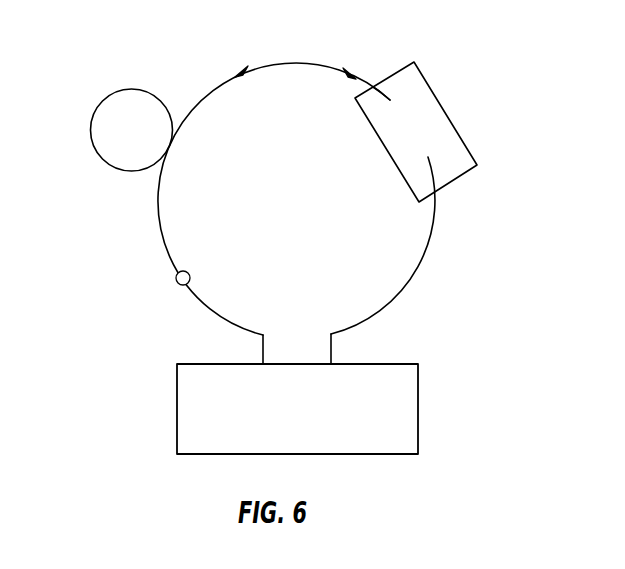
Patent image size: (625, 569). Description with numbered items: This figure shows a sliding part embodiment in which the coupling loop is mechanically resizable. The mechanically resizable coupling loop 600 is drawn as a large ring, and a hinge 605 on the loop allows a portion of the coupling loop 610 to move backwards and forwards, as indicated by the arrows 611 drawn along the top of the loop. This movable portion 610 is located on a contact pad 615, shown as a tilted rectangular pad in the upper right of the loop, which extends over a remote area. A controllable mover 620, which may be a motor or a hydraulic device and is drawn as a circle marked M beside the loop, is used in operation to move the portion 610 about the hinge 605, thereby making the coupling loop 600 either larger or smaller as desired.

The mechanically resizable coupling loop 600 is at (148, 238).
The hinge 605 is at (185, 271).
The portion of the coupling loop 610 is at (390, 100).
The arrows 611 is at (277, 63).
The contact pad 615 is at (474, 155).
The controllable mover 620 is at (118, 88).